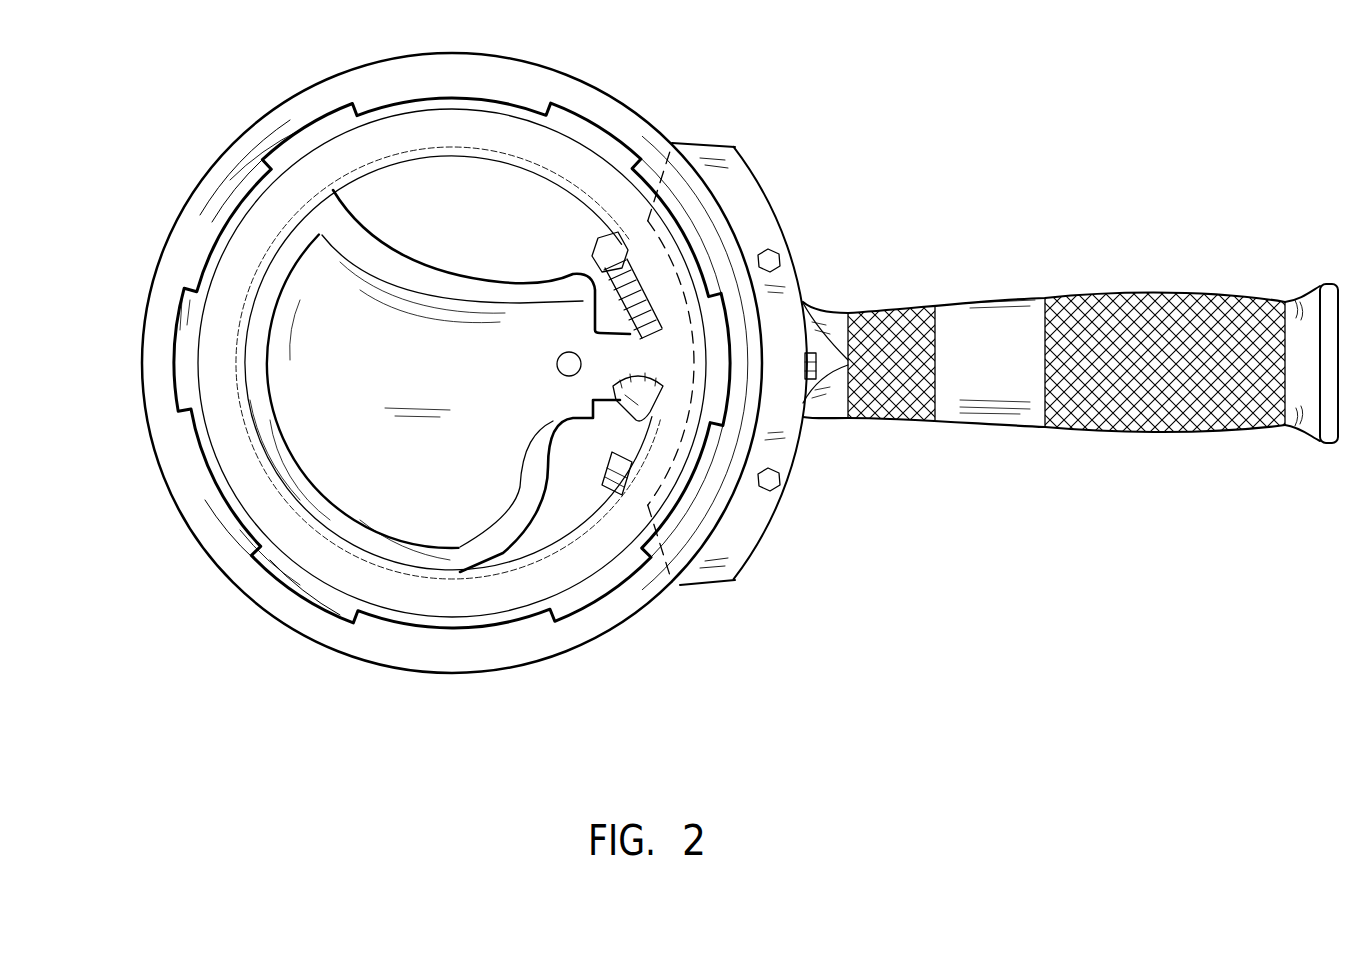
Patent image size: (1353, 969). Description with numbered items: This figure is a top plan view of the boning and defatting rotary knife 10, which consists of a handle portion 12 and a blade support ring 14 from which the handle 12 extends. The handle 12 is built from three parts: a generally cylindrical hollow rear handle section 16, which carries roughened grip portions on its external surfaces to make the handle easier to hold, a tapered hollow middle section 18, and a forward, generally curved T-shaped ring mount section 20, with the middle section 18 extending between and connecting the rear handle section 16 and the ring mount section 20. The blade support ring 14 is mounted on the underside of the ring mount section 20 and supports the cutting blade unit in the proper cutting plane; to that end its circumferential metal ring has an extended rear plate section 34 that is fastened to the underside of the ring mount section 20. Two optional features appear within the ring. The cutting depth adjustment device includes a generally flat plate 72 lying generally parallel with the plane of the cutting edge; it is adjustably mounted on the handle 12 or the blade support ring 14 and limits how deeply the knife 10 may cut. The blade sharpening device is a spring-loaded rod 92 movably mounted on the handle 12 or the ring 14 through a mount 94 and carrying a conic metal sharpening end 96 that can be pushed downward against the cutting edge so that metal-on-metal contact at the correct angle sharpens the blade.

The boning and defatting rotary knife 10 is at (380, 671).
The handle portion 12 is at (995, 322).
The blade support ring 14 is at (262, 163).
The rear handle section 16 is at (1172, 395).
The tapered hollow middle section 18 is at (900, 380).
The ring mount section 20 is at (789, 401).
The extended rear plate section 34 is at (740, 524).
The plate 72 is at (352, 461).
The spring-loaded rod 92 is at (585, 236).
The mount 94 is at (645, 345).
The conic metal sharpening end 96 is at (620, 372).